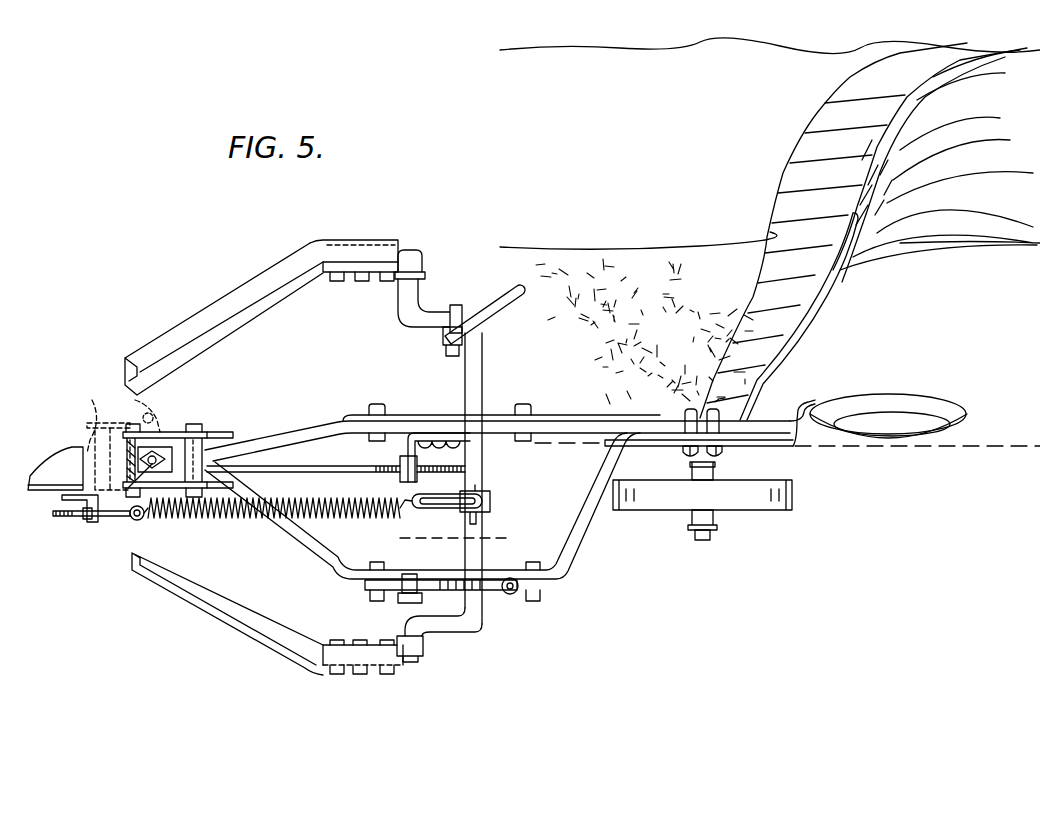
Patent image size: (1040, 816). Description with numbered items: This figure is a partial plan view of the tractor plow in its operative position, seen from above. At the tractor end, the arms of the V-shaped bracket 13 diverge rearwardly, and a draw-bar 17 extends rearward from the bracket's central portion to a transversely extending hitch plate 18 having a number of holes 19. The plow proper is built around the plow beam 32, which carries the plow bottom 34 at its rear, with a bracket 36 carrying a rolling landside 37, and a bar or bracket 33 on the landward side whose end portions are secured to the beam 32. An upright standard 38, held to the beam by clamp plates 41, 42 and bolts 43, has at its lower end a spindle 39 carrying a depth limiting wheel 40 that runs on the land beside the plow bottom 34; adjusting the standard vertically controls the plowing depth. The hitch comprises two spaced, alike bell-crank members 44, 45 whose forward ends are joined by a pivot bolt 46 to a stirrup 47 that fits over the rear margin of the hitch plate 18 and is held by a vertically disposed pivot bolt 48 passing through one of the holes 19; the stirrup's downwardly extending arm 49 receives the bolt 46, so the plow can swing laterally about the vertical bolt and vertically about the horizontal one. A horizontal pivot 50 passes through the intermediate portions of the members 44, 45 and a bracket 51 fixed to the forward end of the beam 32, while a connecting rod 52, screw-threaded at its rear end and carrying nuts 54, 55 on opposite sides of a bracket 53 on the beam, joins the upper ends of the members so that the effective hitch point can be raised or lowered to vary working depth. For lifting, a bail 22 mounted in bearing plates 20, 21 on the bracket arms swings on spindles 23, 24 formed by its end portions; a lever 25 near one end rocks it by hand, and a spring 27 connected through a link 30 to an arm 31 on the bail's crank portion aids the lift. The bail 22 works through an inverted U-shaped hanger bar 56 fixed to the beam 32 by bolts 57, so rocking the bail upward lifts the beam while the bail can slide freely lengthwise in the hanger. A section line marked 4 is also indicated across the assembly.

The section line 4- 4 is at (456, 541).
The V-shaped bracket 13 is at (252, 620).
The draw-bar 17 is at (108, 420).
The hitch plate 18 is at (238, 302).
The holes 19 is at (150, 522).
The bearing plate 20 is at (392, 662).
The bearing plate 21 is at (405, 258).
The bail 22 is at (484, 462).
The spindle 23 is at (405, 625).
The spindle 24 is at (422, 290).
The lever 25 is at (490, 312).
The spring 27 is at (223, 518).
The link 30 is at (442, 510).
The arm 31 is at (492, 500).
The plow beam 32 is at (552, 434).
The bar or bracket 33 is at (568, 540).
The plow bottom 34 is at (800, 310).
The bracket 36 is at (800, 448).
The rolling landside 37 is at (888, 396).
The upright standard 38 is at (702, 441).
The spindle 39 is at (700, 540).
The depth limiting wheel 40 is at (667, 500).
The clamp plate 41 is at (700, 460).
The clamp plate 42 is at (722, 417).
The bolts 43 is at (684, 450).
The hitch member 44 is at (180, 488).
The hitch member 45 is at (187, 431).
The pivot bolt 46 is at (110, 426).
The stirrup 47 is at (158, 448).
The pivot bolt 48 is at (130, 500).
The arm 49 is at (128, 465).
The horizontal pivot 50 is at (200, 522).
The bracket 51 is at (230, 445).
The connecting rod 52 is at (298, 470).
The bracket 53 is at (404, 441).
The nut 54 is at (400, 476).
The nut 55 is at (422, 473).
The inverted U-shaped bar 56 is at (437, 421).
The bolts 57 is at (377, 404).